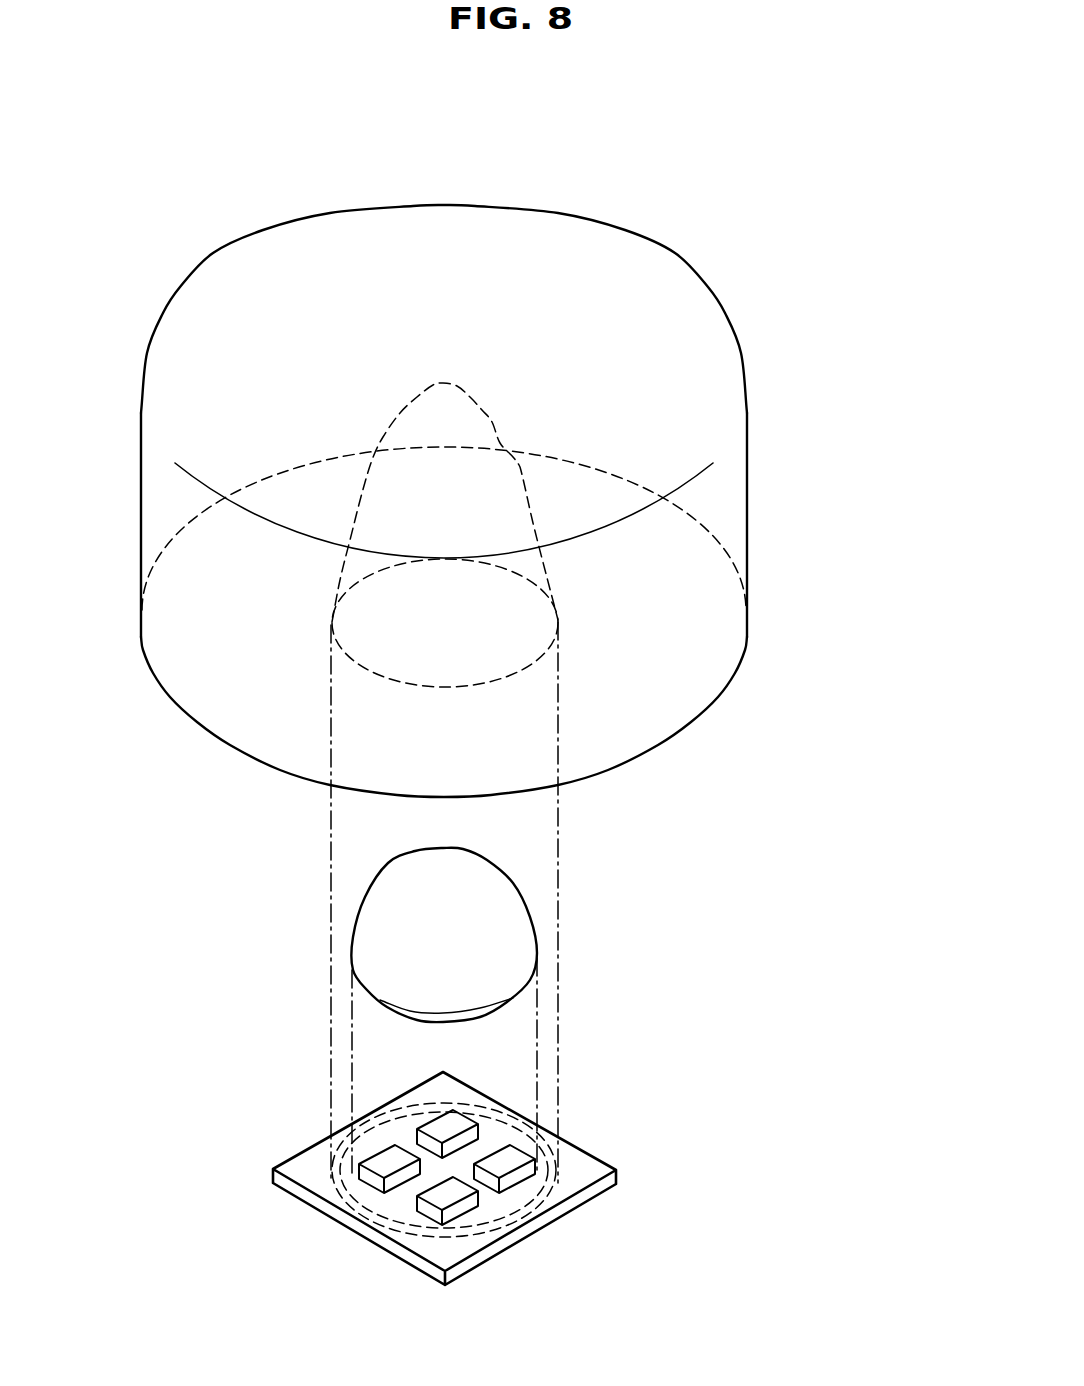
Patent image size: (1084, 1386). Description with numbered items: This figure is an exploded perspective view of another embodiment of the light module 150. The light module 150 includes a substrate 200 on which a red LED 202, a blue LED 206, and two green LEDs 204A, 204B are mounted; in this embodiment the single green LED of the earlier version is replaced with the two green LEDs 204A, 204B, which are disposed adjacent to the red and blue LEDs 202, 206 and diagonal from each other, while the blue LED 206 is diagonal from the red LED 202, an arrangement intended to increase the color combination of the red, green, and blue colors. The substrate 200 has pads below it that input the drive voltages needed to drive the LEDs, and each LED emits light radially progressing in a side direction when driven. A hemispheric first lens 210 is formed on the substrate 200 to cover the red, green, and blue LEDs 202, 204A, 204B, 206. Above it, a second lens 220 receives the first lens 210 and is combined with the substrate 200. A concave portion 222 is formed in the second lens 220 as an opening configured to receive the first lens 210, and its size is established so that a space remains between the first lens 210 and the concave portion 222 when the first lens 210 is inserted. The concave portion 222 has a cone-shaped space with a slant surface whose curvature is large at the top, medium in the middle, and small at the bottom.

The light module 150 is at (517, 752).
The substrate 200 is at (598, 1165).
The red LED 202 is at (435, 1128).
The green LED 204A is at (513, 1157).
The green LED 204B is at (378, 1163).
The blue LED 206 is at (455, 1203).
The first lens 210 is at (592, 913).
The second lens 220 is at (794, 470).
The concave portion 222 is at (492, 422).